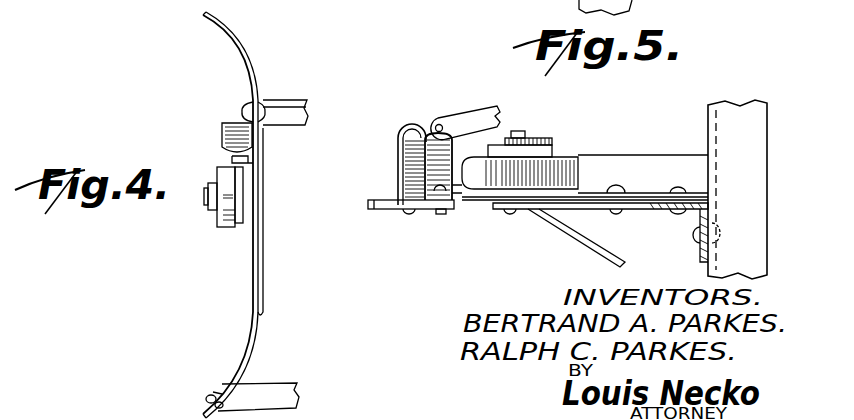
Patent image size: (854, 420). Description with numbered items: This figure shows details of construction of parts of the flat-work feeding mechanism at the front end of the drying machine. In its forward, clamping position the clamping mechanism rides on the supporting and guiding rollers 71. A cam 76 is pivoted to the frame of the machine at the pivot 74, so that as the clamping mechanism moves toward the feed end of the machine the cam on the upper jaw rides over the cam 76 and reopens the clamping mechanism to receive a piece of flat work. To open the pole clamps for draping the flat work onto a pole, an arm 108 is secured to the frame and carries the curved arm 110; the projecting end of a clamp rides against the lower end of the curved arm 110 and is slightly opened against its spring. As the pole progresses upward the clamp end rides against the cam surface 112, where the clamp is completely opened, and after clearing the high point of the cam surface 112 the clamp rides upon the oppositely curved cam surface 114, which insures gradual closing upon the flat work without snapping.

In FIG. 4, the supporting and guiding rollers 71 is at (218, 227).
In FIG. 5, the supporting and guiding rollers 71 is at (545, 144).
In FIG. 4, the pivot 74 is at (241, 111).
In FIG. 5, the pivot 74 is at (618, 185).
In FIG. 4, the cam 76 is at (229, 133).
In FIG. 5, the cam 76 is at (553, 168).
In FIG. 4, the arm 108 is at (280, 395).
In FIG. 5, the arm 108 is at (491, 97).
In FIG. 4, the curved arm 110 is at (251, 358).
In FIG. 5, the curved arm 110 is at (436, 163).
In FIG. 4, the cam surface 112 is at (264, 265).
In FIG. 5, the cam surface 112 is at (380, 202).
In FIG. 4, the oppositely curved cam surface 114 is at (241, 53).
In FIG. 5, the oppositely curved cam surface 114 is at (410, 159).